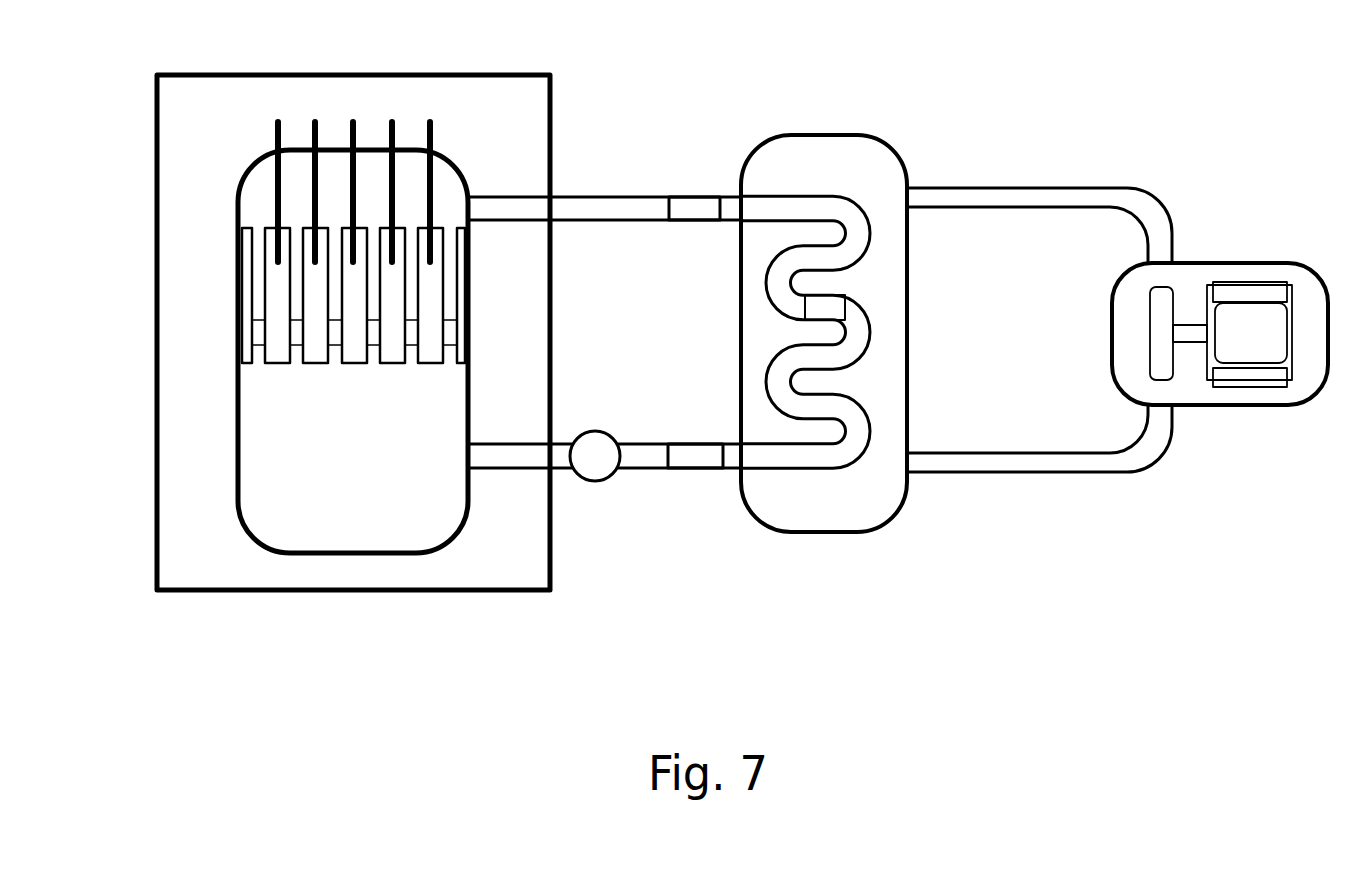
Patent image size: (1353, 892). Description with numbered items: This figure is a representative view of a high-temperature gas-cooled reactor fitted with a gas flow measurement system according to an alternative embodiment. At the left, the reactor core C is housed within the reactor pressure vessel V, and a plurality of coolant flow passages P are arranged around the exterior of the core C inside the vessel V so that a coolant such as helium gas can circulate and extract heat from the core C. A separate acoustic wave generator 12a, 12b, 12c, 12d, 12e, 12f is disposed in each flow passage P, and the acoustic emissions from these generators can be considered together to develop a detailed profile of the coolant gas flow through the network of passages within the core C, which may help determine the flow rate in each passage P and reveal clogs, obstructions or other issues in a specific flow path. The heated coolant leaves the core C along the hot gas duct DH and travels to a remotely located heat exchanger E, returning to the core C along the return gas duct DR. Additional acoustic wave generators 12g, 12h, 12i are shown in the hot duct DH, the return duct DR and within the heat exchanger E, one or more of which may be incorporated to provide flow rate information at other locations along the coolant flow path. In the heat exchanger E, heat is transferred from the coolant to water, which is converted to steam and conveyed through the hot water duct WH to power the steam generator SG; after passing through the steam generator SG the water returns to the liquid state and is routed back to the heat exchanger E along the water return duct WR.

The coolant flow passage P is at (450, 242).
The reactor core C is at (272, 300).
The reactor pressure vessel V is at (238, 480).
The acoustic wave generator 12a is at (252, 340).
The acoustic wave generator 12b is at (290, 343).
The acoustic wave generator 12c is at (330, 340).
The acoustic wave generator 12d is at (380, 337).
The acoustic wave generator 12e is at (420, 337).
The acoustic wave generator 12f is at (462, 337).
The acoustic wave generator 12g is at (690, 445).
The acoustic wave generator 12h is at (695, 222).
The acoustic wave generator 12i is at (830, 302).
The return gas duct DR is at (632, 195).
The hot gas duct DH is at (658, 475).
The heat exchanger E is at (740, 322).
The hot water duct WH is at (1013, 188).
The water return duct WR is at (1022, 472).
The steam generator SG is at (1222, 263).